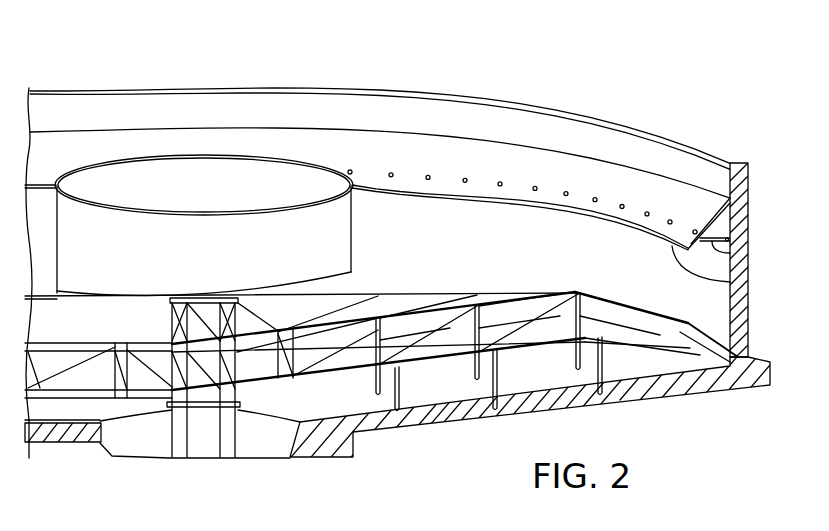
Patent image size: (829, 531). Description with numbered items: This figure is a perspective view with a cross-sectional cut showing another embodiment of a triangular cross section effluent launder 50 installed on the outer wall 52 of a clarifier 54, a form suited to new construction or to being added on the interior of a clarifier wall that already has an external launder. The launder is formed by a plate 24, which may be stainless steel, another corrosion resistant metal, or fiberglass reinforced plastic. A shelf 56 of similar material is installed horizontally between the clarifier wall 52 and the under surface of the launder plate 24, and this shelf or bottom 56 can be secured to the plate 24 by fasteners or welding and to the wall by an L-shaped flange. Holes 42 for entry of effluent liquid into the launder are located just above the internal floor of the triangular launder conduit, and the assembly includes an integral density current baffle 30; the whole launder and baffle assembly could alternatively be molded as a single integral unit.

The clarifier 54 is at (510, 75).
The outer wall 52 is at (551, 121).
The holes 42 is at (622, 204).
The plate 24 is at (643, 190).
The triangular cross section effluent launder 50 is at (678, 160).
The shelf 56 is at (730, 255).
The integral density current baffle 30 is at (730, 285).